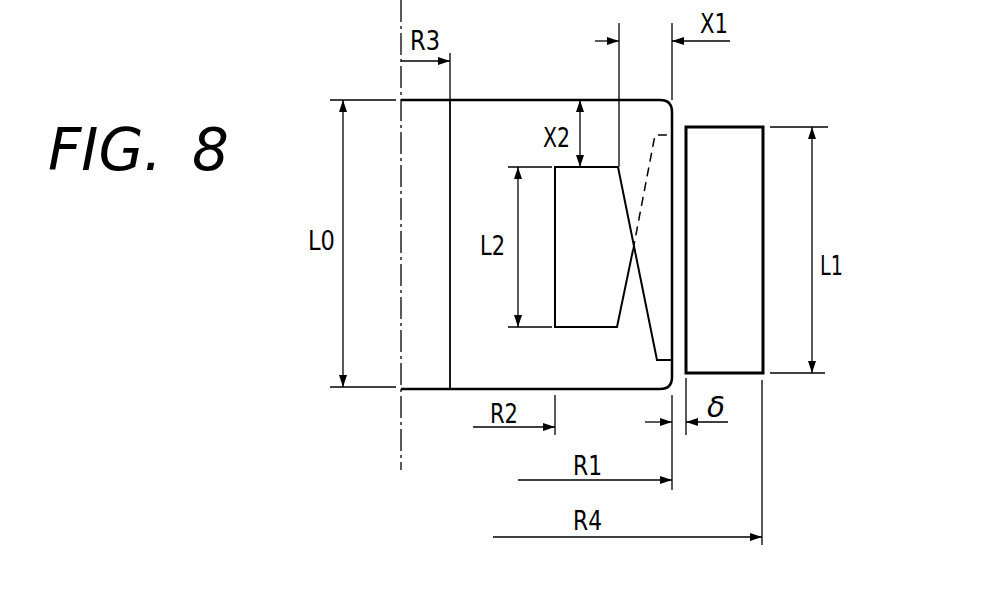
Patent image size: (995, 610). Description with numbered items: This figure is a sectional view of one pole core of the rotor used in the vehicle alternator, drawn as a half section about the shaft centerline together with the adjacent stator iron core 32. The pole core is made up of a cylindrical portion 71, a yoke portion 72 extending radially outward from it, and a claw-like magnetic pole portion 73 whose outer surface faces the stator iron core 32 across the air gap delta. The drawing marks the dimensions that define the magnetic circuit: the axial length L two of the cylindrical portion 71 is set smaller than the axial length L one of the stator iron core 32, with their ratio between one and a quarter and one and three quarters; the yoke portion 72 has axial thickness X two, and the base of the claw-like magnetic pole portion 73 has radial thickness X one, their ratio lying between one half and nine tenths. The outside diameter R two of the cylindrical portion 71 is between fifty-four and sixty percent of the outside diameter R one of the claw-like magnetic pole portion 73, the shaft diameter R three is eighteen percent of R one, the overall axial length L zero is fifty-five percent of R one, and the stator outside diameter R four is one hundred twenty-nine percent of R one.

The cylindrical portion 71 is at (482, 333).
The yoke portion 72 is at (598, 107).
The claw-like magnetic pole portion 73 is at (653, 228).
The stator iron core 32 is at (730, 140).